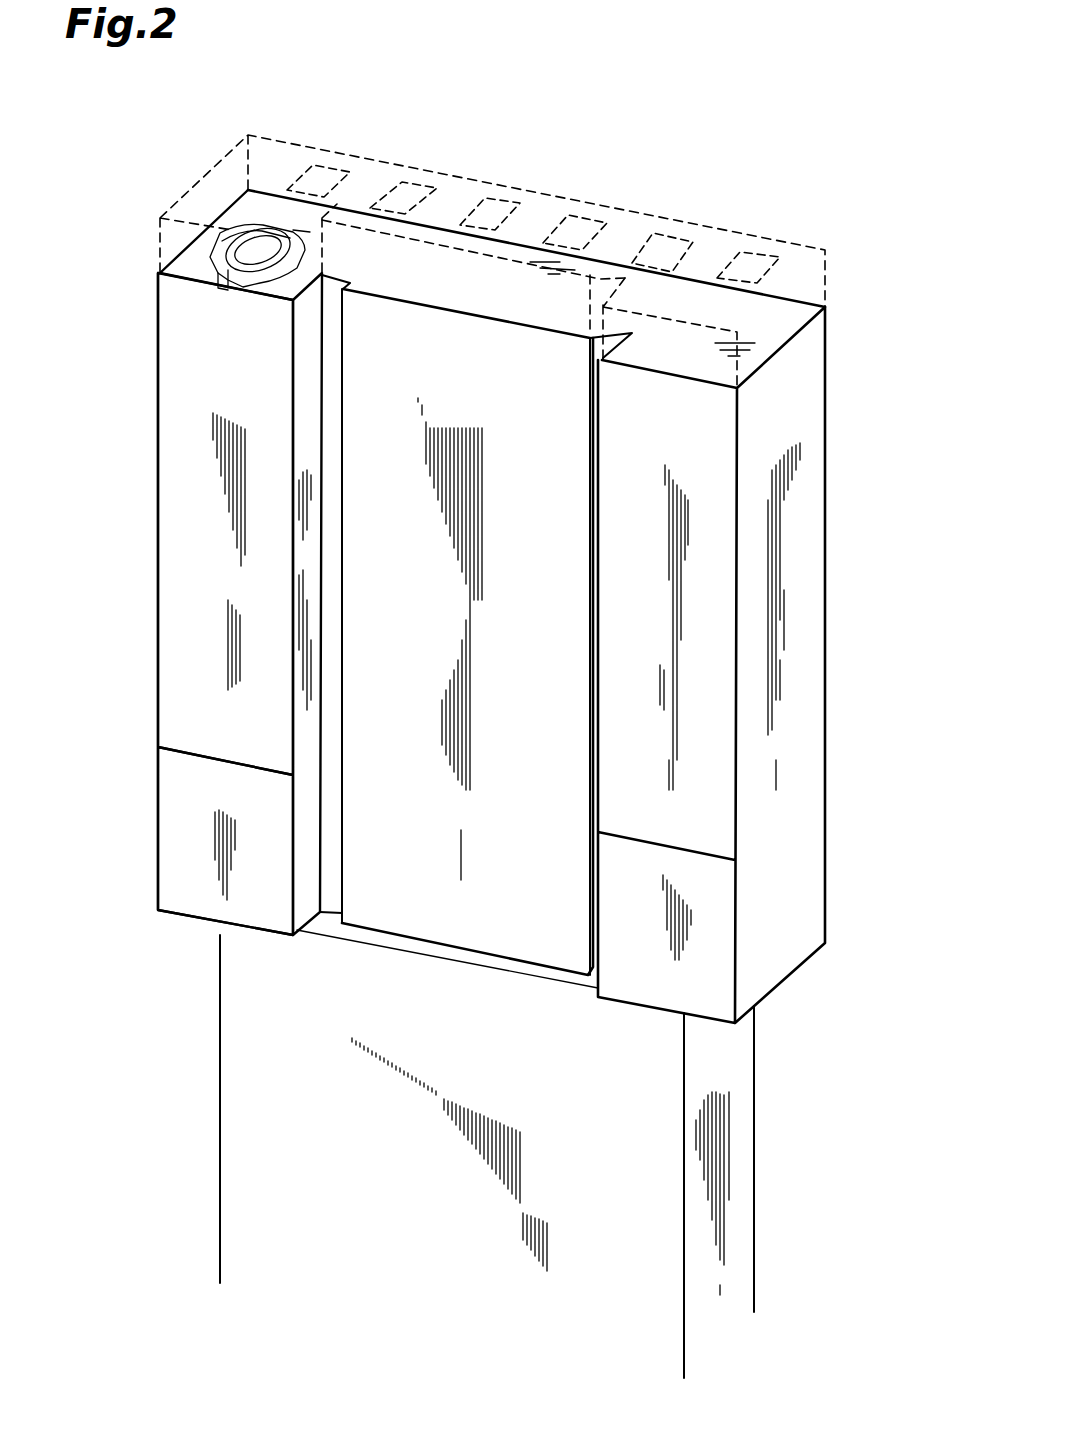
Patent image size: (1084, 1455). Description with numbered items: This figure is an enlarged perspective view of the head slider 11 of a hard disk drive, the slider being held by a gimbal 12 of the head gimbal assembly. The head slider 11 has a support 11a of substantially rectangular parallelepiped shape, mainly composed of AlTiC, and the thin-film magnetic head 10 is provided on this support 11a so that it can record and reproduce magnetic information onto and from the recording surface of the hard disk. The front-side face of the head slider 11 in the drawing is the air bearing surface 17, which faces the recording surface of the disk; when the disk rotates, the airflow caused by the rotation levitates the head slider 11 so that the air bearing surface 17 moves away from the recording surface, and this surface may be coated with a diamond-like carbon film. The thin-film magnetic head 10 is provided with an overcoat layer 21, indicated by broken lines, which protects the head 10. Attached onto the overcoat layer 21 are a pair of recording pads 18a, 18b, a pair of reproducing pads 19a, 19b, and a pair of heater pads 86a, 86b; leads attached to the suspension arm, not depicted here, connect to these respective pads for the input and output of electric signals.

The thin-film magnetic head 10 is at (218, 188).
The head slider 11 is at (861, 464).
The support 11a is at (798, 660).
The gimbal 12 is at (740, 1068).
The air bearing surface 17 is at (188, 502).
The recording pad 18a is at (672, 238).
The recording pad 18b is at (755, 257).
The reproducing pad 19a is at (327, 170).
The reproducing pad 19b is at (417, 185).
The overcoat layer 21 is at (710, 250).
The heater pad 86a is at (500, 200).
The heater pad 86b is at (585, 220).